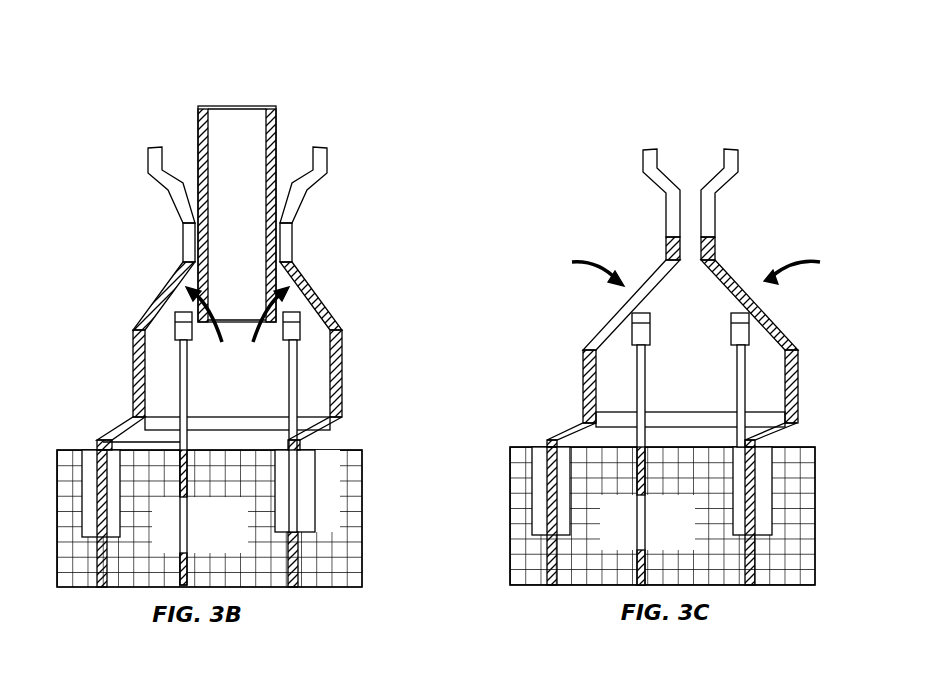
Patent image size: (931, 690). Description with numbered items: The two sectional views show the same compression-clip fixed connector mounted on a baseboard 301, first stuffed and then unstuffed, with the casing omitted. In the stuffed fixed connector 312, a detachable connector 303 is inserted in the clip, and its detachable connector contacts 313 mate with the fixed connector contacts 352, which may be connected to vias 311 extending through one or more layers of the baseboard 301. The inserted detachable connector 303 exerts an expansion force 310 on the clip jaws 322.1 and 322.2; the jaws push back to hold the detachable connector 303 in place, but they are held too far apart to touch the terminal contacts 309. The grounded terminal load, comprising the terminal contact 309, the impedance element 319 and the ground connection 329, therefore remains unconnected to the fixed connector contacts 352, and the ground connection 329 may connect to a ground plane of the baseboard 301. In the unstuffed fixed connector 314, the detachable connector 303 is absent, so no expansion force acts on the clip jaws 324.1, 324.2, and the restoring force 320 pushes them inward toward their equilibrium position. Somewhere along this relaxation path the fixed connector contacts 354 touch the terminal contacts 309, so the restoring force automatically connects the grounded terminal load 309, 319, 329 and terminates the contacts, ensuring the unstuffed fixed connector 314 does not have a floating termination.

In FIG. 3B, the baseboard 301 is at (230, 495).
In FIG. 3C, the baseboard 301 is at (662, 516).
In FIG. 3B, the detachable connector 303 is at (315, 167).
In FIG. 3B, the terminal contact 309 is at (165, 312).
In FIG. 3C, the terminal contact 309 is at (632, 290).
In FIG. 3B, the expansion force 310 is at (297, 278).
In FIG. 3B, the via 311 is at (322, 470).
In FIG. 3B, the stuffed fixed connector 312 is at (244, 295).
In FIG. 3B, the detachable connector contact 313 is at (237, 73).
In FIG. 3C, the unstuffed fixed connector 314 is at (658, 306).
In FIG. 3B, the impedance element 319 is at (178, 322).
In FIG. 3C, the restoring force 320 is at (790, 258).
In FIG. 3B, the clip jaw 322.1 is at (168, 190).
In FIG. 3B, the clip jaw 322.2 is at (305, 203).
In FIG. 3C, the clip jaw 324.1 is at (652, 162).
In FIG. 3C, the clip jaw 324.2 is at (745, 150).
In FIG. 3B, the ground connection 329 is at (184, 396).
In FIG. 3B, the fixed connector contact 352 is at (340, 312).
In FIG. 3C, the fixed connector contact 354 is at (639, 293).